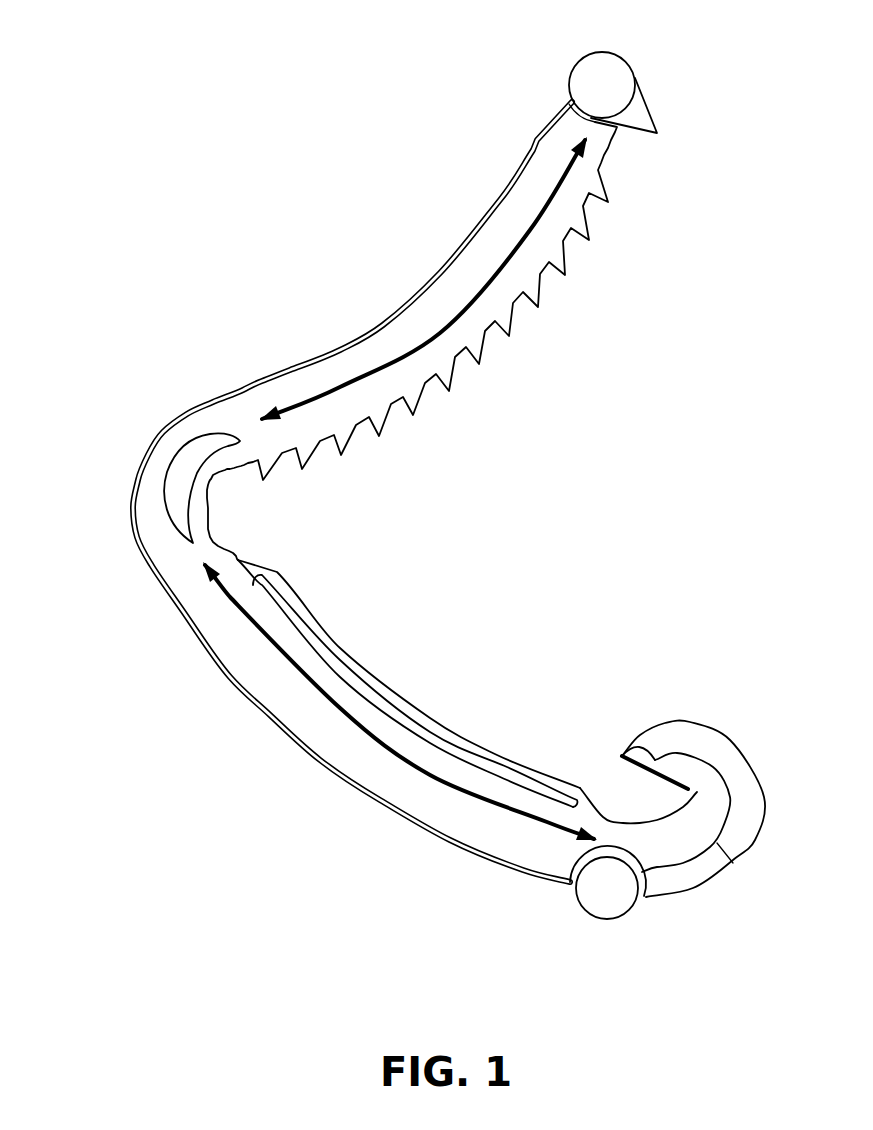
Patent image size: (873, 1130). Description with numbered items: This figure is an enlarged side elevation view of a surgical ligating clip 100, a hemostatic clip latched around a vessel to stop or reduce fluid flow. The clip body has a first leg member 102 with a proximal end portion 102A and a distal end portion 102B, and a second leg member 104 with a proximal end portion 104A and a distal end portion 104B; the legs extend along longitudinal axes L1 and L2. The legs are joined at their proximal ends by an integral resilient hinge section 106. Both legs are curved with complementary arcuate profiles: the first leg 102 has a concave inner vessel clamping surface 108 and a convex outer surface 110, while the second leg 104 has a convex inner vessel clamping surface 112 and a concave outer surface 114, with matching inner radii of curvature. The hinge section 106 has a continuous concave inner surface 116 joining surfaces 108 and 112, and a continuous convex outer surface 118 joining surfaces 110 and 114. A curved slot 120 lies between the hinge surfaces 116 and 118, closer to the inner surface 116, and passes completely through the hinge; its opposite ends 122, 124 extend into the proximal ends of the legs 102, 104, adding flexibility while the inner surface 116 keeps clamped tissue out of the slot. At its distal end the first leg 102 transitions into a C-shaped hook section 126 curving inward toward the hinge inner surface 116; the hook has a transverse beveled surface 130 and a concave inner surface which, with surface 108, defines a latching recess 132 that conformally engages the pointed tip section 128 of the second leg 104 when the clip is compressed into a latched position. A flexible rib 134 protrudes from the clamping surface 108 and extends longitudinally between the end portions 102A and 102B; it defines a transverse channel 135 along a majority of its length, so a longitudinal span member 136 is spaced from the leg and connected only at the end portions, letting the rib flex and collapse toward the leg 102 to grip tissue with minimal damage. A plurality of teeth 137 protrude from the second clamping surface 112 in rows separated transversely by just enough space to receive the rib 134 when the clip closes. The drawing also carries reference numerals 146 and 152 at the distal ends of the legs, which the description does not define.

The surgical ligating clip 100 is at (145, 250).
The first leg member 102 is at (280, 768).
The proximal end portion of first leg member 102A is at (138, 622).
The distal end portion of first leg member 102B is at (598, 953).
The second leg member 104 is at (365, 255).
The proximal end portion of second leg member 104A is at (210, 370).
The distal end portion of second leg member 104B is at (522, 103).
The hinge section 106 is at (110, 474).
The concave inner vessel clamping surface 108 is at (433, 690).
The convex outer surface 110 is at (404, 822).
The convex inner vessel clamping surface 112 is at (506, 365).
The concave outer surface 114 is at (441, 266).
The concave inner surface of hinge section 116 is at (217, 488).
The convex outer surface of hinge section 118 is at (143, 450).
The curved slot 120 is at (181, 488).
The slot end 122 is at (186, 535).
The slot end 124 is at (236, 437).
The hook section 126 is at (747, 754).
The pointed tip section 128 is at (657, 128).
The transverse beveled surface 130 is at (630, 752).
The latching recess 132 is at (690, 791).
The flexible rib 134 is at (343, 645).
The channel 135 is at (453, 750).
The longitudinal span member 136 is at (508, 766).
The teeth 137 is at (563, 266).
The first ball end 146 is at (590, 902).
The second ball end 152 is at (577, 72).
The longitudinal axis L1 is at (272, 641).
The longitudinal axis L2 is at (380, 368).